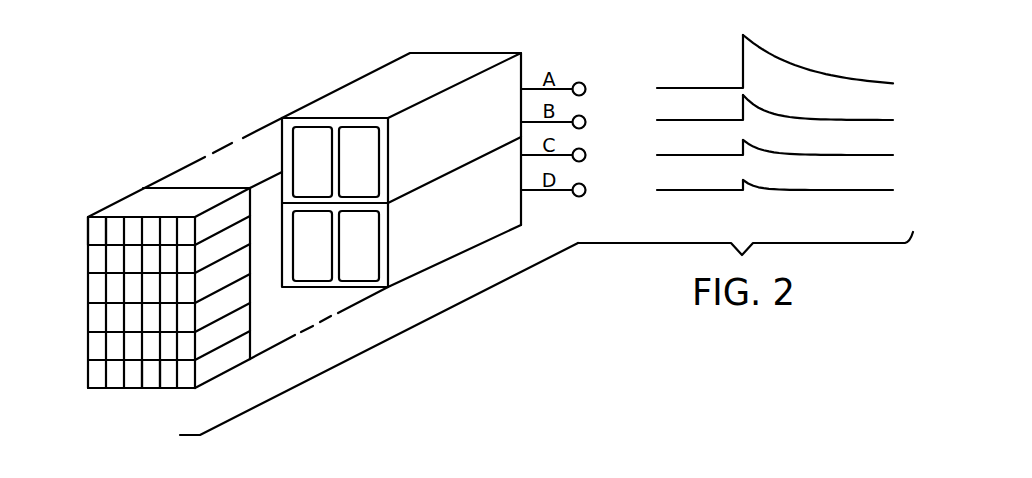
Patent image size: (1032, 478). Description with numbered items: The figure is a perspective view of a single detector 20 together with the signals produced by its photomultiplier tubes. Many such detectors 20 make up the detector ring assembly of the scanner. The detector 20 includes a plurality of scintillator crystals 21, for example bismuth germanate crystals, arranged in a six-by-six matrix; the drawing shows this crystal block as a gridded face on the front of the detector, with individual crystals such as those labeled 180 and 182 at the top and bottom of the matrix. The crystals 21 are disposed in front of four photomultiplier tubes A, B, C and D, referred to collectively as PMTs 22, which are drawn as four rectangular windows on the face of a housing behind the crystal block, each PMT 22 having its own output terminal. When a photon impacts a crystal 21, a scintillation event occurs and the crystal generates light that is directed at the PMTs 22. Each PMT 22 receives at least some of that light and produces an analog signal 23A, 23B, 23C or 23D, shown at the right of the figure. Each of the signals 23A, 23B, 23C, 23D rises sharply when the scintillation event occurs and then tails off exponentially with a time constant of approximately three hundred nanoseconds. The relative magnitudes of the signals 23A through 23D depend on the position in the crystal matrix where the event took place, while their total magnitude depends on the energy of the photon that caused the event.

The detector 20 is at (304, 73).
The scintillator crystals 21 is at (84, 247).
The photomultiplier tubes 22 is at (466, 155).
The analog signal 23A is at (789, 63).
The analog signal 23B is at (764, 106).
The analog signal 23C is at (758, 146).
The analog signal 23D is at (754, 181).
The crystal element 180 is at (96, 217).
The crystal element 182 is at (152, 390).